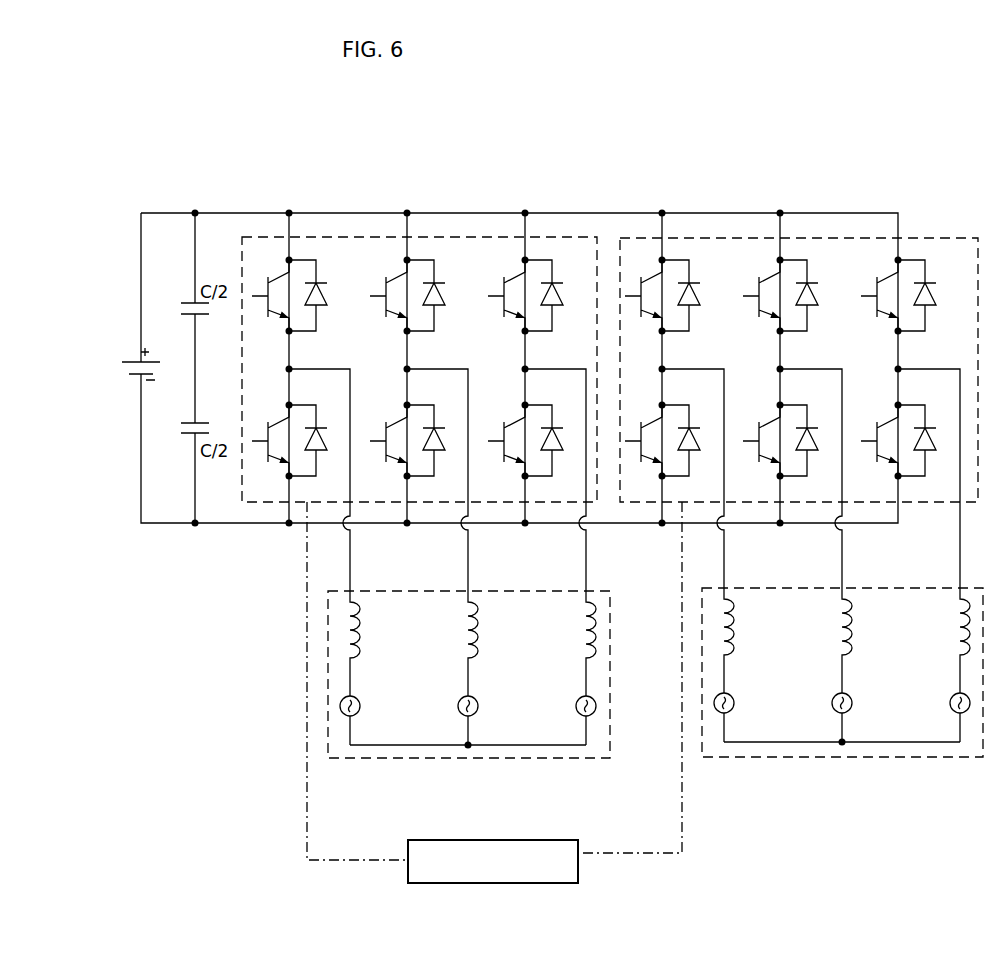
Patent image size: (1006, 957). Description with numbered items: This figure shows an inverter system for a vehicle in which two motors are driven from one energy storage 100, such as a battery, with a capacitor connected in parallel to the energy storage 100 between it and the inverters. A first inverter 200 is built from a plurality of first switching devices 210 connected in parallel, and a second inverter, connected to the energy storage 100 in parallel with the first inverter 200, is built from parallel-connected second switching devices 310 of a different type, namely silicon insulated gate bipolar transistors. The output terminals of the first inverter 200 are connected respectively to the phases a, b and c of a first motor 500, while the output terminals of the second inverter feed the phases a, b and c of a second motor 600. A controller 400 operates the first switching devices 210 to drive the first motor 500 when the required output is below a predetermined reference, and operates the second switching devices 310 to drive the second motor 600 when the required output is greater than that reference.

The energy storage 100 is at (127, 360).
The first inverter 200 is at (273, 237).
The first switching devices 210 is at (301, 256).
The second switching devices 310 is at (674, 256).
The controller 400 is at (493, 861).
The first motor 500 is at (368, 758).
The second motor 600 is at (920, 757).